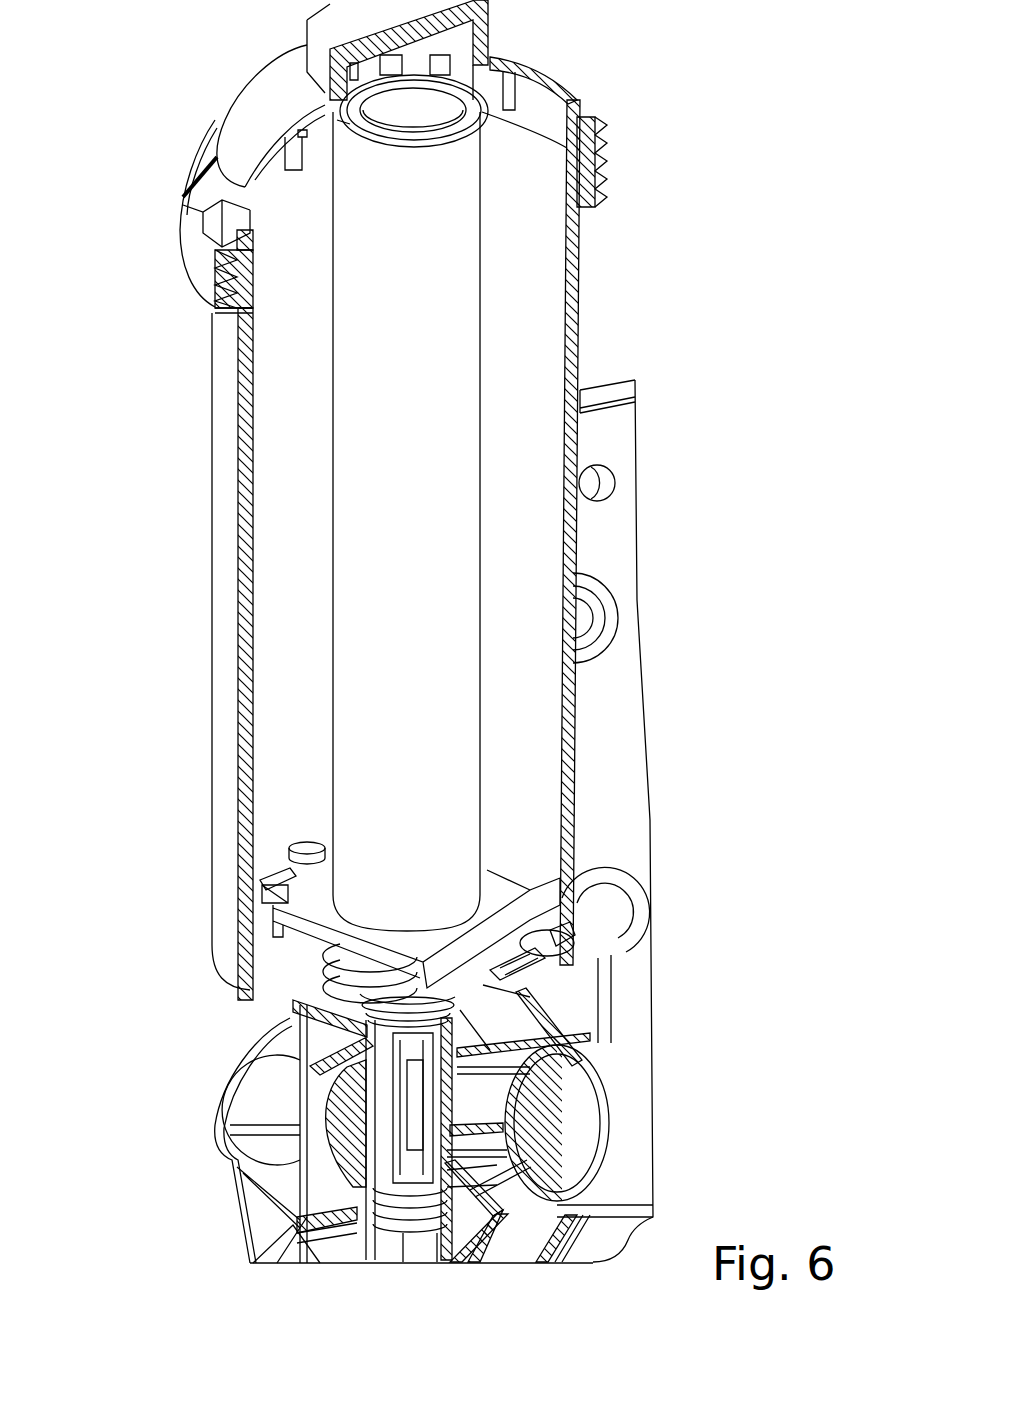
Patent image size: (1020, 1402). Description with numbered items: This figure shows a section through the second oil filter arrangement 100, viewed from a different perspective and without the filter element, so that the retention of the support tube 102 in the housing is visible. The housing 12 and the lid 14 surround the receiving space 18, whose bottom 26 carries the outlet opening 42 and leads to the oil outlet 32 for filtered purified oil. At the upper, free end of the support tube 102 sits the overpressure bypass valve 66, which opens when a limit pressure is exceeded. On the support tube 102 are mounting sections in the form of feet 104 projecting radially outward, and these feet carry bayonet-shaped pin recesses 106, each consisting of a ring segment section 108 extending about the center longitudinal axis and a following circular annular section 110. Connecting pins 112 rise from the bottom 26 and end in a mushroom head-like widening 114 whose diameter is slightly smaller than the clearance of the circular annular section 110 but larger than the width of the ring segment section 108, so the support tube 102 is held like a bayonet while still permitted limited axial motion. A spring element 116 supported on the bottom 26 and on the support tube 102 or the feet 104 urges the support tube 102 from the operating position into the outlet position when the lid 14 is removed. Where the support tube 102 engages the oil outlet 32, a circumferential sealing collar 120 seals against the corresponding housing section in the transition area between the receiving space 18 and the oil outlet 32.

The oil filter arrangement 100 is at (128, 106).
The lid 14 is at (493, 67).
The overpressure bypass valve 66 is at (440, 110).
The housing 12 is at (579, 290).
The support tube 102 is at (455, 352).
The receiving space 18 is at (530, 720).
The feet 104 is at (257, 920).
The mushroom head-like widening 114 is at (299, 846).
The connecting pins 112 is at (278, 853).
The bayonet-shaped pin recesses 106 is at (279, 886).
The circular annular section 110 is at (549, 912).
The ring segment section 108 is at (608, 970).
The bottom 26 is at (283, 978).
The oil outlet 32 is at (403, 1107).
The spring element 116 is at (410, 1127).
The outlet opening 42 is at (423, 1252).
The sealing collar 120 is at (300, 1070).